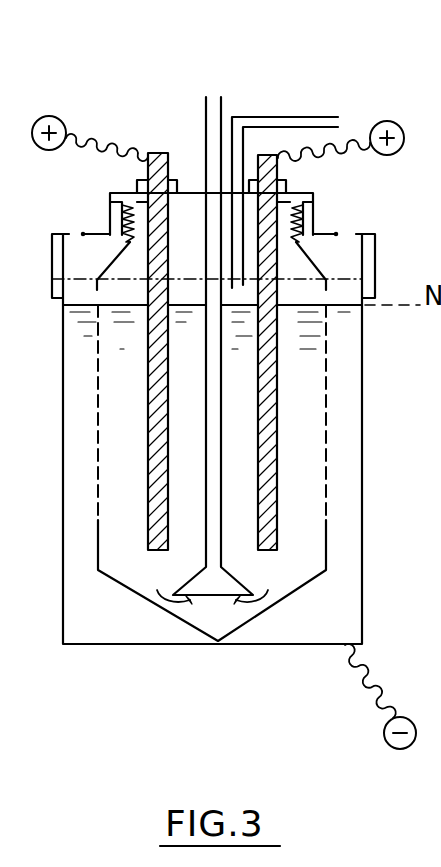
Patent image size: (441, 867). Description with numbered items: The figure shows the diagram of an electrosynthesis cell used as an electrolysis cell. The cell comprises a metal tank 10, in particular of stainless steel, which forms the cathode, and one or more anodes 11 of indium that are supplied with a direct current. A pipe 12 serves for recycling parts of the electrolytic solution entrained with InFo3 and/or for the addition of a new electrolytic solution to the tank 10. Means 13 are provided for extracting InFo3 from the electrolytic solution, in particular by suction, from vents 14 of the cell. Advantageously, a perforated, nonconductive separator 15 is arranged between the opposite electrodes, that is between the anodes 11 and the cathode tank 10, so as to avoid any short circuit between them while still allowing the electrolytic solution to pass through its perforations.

The metal tank 10 is at (90, 645).
The anodes 11 is at (277, 430).
The pipe 12 is at (305, 117).
The means for extracting InFo3 13 is at (213, 587).
The vents 14 is at (343, 228).
The perforated, nonconductive separator 15 is at (98, 370).